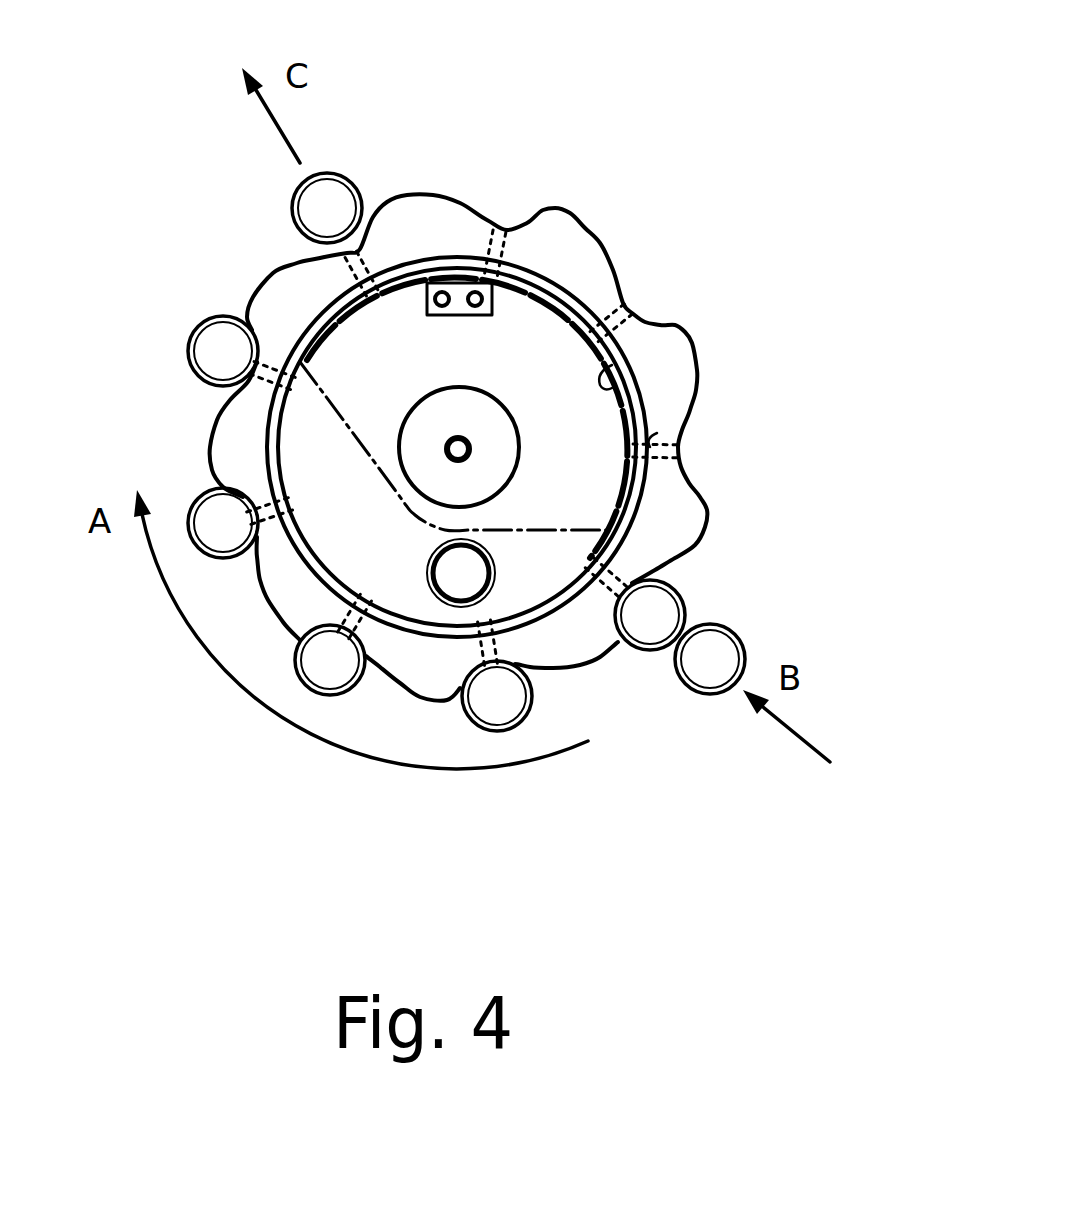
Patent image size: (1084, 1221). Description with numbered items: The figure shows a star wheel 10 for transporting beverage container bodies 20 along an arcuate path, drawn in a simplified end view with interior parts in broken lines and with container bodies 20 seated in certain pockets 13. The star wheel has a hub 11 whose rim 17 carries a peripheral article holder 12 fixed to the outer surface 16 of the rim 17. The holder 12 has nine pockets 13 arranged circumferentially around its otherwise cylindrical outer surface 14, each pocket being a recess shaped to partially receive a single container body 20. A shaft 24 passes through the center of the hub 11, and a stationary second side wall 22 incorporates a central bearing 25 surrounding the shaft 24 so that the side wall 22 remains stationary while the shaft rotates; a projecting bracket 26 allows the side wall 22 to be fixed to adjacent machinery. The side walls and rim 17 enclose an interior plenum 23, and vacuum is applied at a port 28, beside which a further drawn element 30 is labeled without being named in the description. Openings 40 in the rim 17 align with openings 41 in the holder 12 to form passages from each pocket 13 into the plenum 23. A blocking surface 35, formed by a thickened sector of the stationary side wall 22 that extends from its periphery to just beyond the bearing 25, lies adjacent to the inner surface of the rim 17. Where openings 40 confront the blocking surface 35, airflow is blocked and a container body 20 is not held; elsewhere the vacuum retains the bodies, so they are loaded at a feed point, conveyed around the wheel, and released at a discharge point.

The star wheel 10 is at (795, 275).
The hub 11 is at (457, 447).
The peripheral article holder 12 is at (579, 186).
The pockets 13 is at (532, 222).
The outer surface of the holder 14 is at (703, 516).
The outer surface of the rim 16 is at (318, 313).
The rim 17 is at (273, 446).
The beverage container bodies 20 is at (350, 173).
The second side wall 22 is at (456, 441).
The interior plenum 23 is at (327, 533).
The shaft 24 is at (460, 450).
The central bearing 25 is at (493, 428).
The projecting bracket 26 is at (450, 310).
The port 28 is at (455, 571).
The held roller 30 is at (493, 560).
The blocking surface 35 is at (650, 368).
The openings in the rim 40 is at (658, 418).
The openings in the holder 41 is at (686, 456).